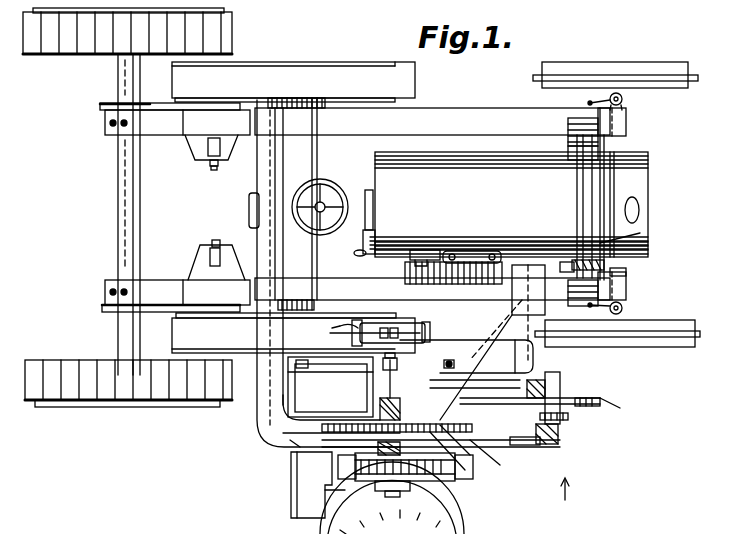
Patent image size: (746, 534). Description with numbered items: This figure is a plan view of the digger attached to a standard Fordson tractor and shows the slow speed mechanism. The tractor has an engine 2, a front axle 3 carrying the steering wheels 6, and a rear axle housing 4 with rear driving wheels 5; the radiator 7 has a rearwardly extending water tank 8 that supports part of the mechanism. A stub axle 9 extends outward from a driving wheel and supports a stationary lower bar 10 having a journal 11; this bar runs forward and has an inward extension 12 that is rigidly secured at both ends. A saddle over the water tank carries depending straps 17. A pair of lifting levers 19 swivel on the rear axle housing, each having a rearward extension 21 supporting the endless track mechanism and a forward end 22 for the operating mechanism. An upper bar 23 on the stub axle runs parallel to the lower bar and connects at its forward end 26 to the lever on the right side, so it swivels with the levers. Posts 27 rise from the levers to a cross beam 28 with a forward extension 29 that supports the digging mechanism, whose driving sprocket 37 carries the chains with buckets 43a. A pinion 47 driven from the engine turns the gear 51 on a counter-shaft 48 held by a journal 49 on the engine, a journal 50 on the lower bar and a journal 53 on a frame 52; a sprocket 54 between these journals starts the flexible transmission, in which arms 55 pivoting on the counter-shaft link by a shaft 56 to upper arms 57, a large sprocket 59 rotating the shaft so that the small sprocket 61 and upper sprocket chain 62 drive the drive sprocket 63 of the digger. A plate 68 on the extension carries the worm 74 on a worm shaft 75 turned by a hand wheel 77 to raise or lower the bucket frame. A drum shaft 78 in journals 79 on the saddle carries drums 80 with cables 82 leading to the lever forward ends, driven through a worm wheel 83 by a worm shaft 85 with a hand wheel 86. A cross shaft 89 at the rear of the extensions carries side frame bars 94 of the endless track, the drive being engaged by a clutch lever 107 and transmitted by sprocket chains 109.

The engine 2 is at (563, 499).
The front axle 3 is at (628, 269).
The rear axle housing 4 is at (316, 165).
The rear driving wheels 5 is at (307, 78).
The steering wheels 6 is at (630, 72).
The radiator 7 is at (640, 181).
The water tank 8 is at (598, 180).
The stub axle 9 is at (292, 440).
The stationary lower bar 10 is at (330, 387).
The journal 11 is at (278, 397).
The inward extension 12 is at (540, 345).
The depending straps 17 is at (595, 268).
The lifting levers 19 is at (432, 118).
The rearward extension 21 is at (165, 126).
The forward end 22 is at (612, 124).
The upper bar 23 is at (330, 418).
The forward end 26 is at (505, 275).
The posts 27 is at (300, 118).
The cross beam 28 is at (249, 208).
The forward extension 29 is at (280, 440).
The driving sprocket 37 is at (412, 480).
The buckets 43a is at (330, 487).
The pinion 47 is at (428, 252).
The counter-shaft 48 is at (470, 325).
The journal 49 is at (478, 252).
The journal 50 is at (449, 362).
The gear 51 is at (500, 262).
The frame 52 is at (490, 385).
The journal 53 is at (460, 432).
The sprocket 54 is at (440, 400).
The arms 55 is at (560, 396).
The shaft 56 is at (560, 434).
The upper arms 57 is at (455, 460).
The large sprocket 59 is at (606, 408).
The small sprocket 61 is at (570, 417).
The upper sprocket chain 62 is at (490, 445).
The drive sprocket 63 is at (330, 465).
The plate 68 is at (396, 388).
The worm 74 is at (395, 328).
The worm shaft 75 is at (378, 323).
The hand wheel 77 is at (346, 330).
The drum shaft 78 is at (572, 152).
The journals 79 is at (562, 265).
The drums 80 is at (570, 125).
The cables 82 is at (622, 100).
The worm wheel 83 is at (605, 243).
The worm shaft 85 is at (470, 240).
The hand wheel 86 is at (376, 236).
The cross shaft 89 is at (128, 215).
The side frame bars 94 is at (180, 408).
The clutch lever 107 is at (215, 168).
The sprocket chains 109 is at (173, 104).